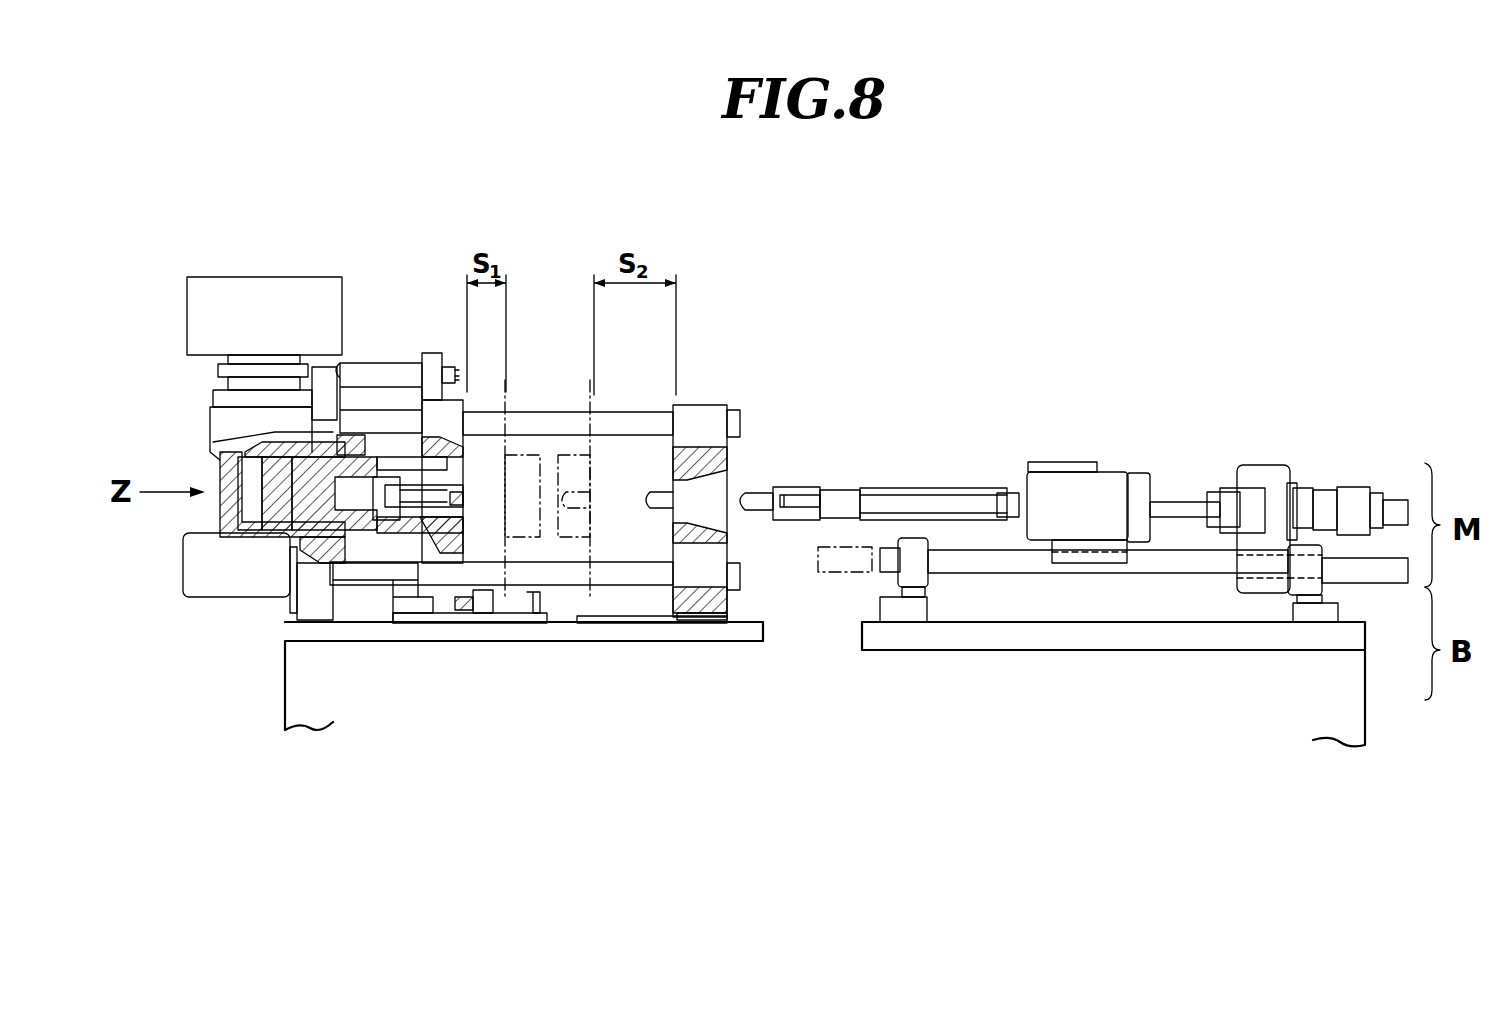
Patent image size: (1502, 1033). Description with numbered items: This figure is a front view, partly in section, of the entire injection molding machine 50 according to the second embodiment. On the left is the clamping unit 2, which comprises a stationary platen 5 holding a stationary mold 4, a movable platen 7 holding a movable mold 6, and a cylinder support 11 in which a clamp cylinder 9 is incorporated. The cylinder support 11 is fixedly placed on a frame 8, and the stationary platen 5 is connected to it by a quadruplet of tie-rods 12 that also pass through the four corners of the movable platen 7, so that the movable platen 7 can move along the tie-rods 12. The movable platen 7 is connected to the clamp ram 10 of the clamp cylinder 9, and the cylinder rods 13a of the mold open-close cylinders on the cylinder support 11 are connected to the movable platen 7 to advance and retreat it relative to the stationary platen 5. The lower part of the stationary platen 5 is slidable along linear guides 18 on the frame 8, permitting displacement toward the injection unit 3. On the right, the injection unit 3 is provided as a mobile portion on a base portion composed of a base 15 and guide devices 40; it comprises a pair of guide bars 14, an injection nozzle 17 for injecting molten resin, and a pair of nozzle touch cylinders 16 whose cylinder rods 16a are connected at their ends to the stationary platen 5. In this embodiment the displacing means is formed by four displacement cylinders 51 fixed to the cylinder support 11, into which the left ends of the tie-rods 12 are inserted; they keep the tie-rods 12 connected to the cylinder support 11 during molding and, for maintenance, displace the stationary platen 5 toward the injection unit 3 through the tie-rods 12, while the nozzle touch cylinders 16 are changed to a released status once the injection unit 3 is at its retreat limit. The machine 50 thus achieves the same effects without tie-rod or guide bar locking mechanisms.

The clamping unit 2 is at (633, 238).
The injection unit 3 is at (1072, 425).
The stationary mold 4 is at (585, 467).
The stationary platen 5 is at (590, 410).
The movable mold 6 is at (505, 497).
The movable platen 7 is at (425, 398).
The frame 8 is at (475, 630).
The clamp cylinder 9 is at (245, 485).
The clamp ram 10 is at (373, 520).
The cylinder support 11 is at (220, 422).
The tie-rods 12 is at (545, 415).
The cylinder rods 13a is at (365, 370).
The guide bars 14 is at (842, 570).
The base 15 is at (1354, 590).
The nozzle touch cylinders 16 is at (928, 500).
The cylinder rods 16a is at (800, 500).
The injection nozzle 17 is at (760, 495).
The linear guides 18 is at (648, 622).
The guide devices 40 is at (918, 555).
The injection molding machine 50 is at (993, 268).
The displacement cylinders 51 is at (233, 577).